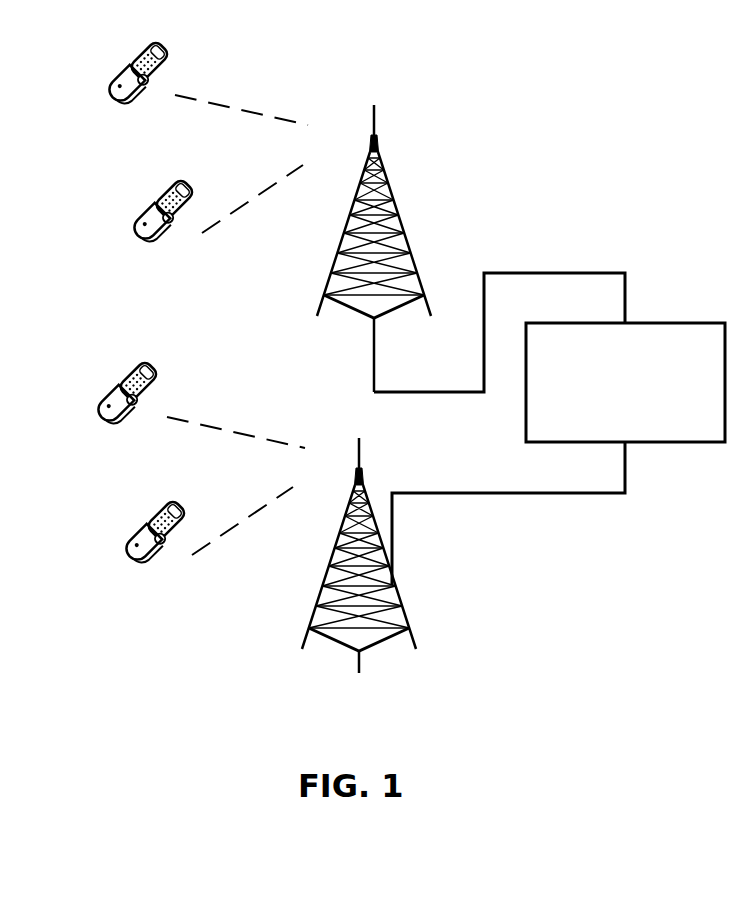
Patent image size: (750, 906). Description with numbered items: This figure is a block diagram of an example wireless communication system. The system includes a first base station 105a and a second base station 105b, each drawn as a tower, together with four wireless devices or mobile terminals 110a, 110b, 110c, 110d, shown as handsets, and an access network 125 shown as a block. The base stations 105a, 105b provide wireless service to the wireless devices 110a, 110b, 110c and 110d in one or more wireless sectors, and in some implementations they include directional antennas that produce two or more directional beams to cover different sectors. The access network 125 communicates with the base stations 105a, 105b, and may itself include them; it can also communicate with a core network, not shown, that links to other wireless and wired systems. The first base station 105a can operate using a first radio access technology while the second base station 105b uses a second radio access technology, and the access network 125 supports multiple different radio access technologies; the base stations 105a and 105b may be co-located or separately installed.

The wireless device 110a is at (120, 48).
The wireless device 110b is at (147, 188).
The wireless device 110c is at (110, 368).
The wireless device 110d is at (137, 508).
The first base station 105a is at (387, 183).
The second base station 105b is at (375, 516).
The access network 125 is at (542, 323).